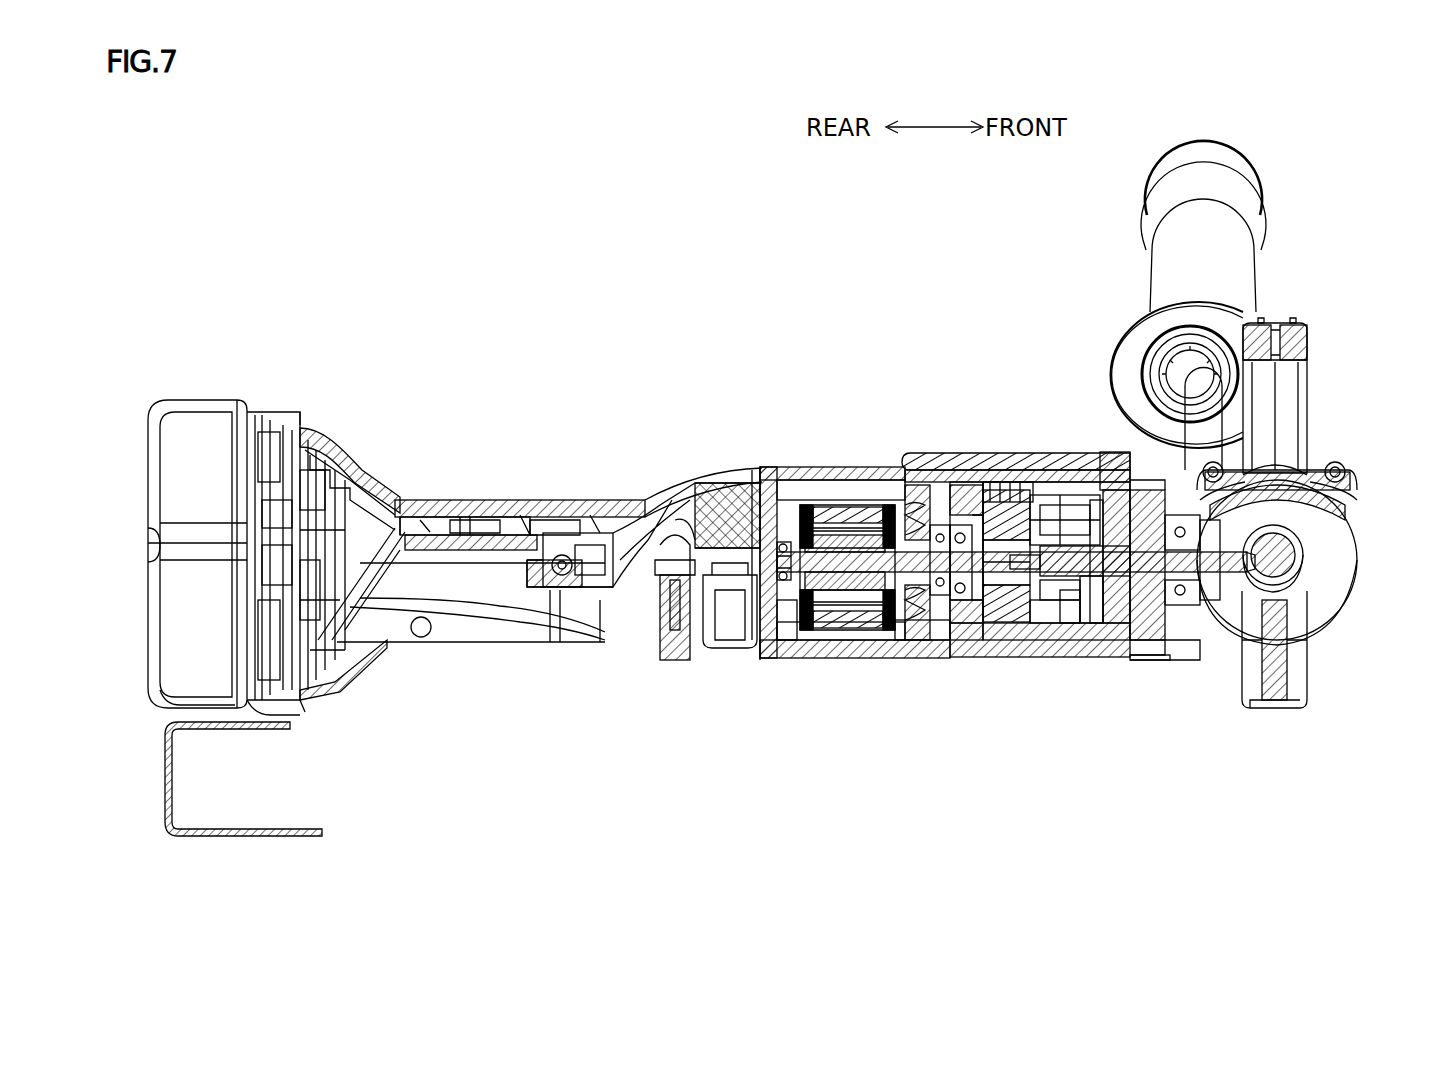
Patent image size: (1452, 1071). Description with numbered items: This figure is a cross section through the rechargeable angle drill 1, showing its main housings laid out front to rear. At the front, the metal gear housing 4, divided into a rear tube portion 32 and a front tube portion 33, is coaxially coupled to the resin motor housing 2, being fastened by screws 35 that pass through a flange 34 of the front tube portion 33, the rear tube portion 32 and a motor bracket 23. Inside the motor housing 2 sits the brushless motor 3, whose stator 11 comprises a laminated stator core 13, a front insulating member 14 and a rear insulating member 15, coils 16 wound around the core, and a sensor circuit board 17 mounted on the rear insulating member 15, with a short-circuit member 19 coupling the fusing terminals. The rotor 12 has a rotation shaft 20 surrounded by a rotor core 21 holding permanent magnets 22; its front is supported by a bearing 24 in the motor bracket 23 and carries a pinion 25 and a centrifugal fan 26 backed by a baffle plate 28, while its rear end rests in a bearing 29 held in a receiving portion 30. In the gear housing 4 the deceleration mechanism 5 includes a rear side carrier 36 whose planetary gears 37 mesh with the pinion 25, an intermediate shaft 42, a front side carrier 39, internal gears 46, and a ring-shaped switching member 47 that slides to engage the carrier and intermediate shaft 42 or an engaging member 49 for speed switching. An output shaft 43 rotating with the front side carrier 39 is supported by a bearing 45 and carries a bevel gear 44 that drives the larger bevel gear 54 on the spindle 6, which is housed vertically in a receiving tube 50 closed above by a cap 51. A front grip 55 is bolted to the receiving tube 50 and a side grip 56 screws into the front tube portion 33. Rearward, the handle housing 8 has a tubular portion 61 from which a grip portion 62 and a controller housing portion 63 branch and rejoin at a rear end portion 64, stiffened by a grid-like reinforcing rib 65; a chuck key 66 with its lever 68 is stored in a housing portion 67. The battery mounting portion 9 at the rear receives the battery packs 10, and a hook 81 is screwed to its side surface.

The angle drill 1 is at (838, 324).
The motor housing 2 is at (862, 504).
The brushless motor 3 is at (846, 508).
The gear housing 4 is at (1085, 453).
The deceleration mechanism 5 is at (1042, 502).
The spindle 6 is at (1292, 565).
The handle housing 8 is at (476, 500).
The battery mounting portion 9 is at (305, 704).
The battery pack 10 is at (178, 414).
The stator 11 is at (826, 518).
The rotor 12 is at (898, 478).
The stator core 13 is at (870, 500).
The front insulating member 14 is at (890, 514).
The rear insulating member 15 is at (800, 520).
The coil 16 is at (866, 646).
The sensor circuit board 17 is at (749, 470).
The short-circuit member 19 is at (800, 660).
The rotation shaft 20 is at (935, 645).
The rotor core 21 is at (898, 645).
The permanent magnet 22 is at (848, 648).
The motor bracket 23 is at (960, 468).
The bearing 24 is at (976, 482).
The pinion 25 is at (992, 625).
The centrifugal fan 26 is at (966, 645).
The baffle plate 28 is at (906, 474).
The bearing 29 is at (772, 660).
The receiving portion 30 is at (718, 650).
The rear tube portion 32 is at (1056, 466).
The front tube portion 33 is at (1166, 644).
The flange 34 is at (1102, 642).
The screw 35 is at (1100, 462).
The rear side carrier 36 is at (1016, 482).
The planetary gear 37 is at (1025, 642).
The front side carrier 39 is at (1130, 522).
The intermediate shaft 42 is at (1078, 612).
The output shaft 43 is at (1160, 606).
The bevel gear 44 is at (1215, 604).
The bearing 45 is at (1182, 606).
The internal gear 46 is at (982, 648).
The switching member 47 is at (1060, 622).
The engaging member 49 is at (1088, 642).
The receiving tube 50 is at (1357, 622).
The cap 51 is at (1366, 508).
The bevel gear 54 is at (1308, 522).
The front grip 55 is at (1288, 325).
The side grip 56 is at (1237, 252).
The tubular portion 61 is at (682, 510).
The grip portion 62 is at (428, 522).
The controller housing portion 63 is at (452, 592).
The rear end portion 64 is at (332, 470).
The reinforcing rib 65 is at (340, 498).
The chuck key 66 is at (660, 512).
The housing portion 67 is at (654, 658).
The lever 68 is at (674, 660).
The hook 81 is at (318, 838).